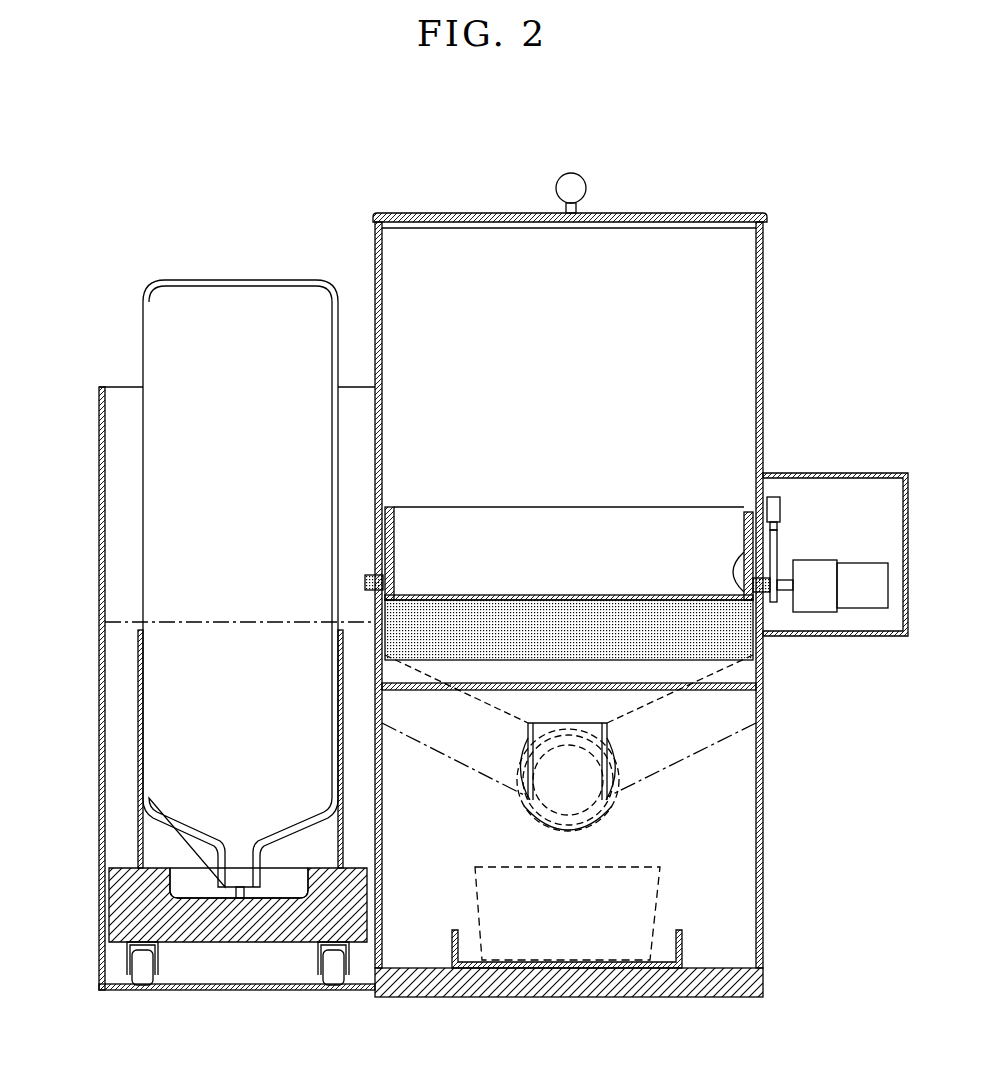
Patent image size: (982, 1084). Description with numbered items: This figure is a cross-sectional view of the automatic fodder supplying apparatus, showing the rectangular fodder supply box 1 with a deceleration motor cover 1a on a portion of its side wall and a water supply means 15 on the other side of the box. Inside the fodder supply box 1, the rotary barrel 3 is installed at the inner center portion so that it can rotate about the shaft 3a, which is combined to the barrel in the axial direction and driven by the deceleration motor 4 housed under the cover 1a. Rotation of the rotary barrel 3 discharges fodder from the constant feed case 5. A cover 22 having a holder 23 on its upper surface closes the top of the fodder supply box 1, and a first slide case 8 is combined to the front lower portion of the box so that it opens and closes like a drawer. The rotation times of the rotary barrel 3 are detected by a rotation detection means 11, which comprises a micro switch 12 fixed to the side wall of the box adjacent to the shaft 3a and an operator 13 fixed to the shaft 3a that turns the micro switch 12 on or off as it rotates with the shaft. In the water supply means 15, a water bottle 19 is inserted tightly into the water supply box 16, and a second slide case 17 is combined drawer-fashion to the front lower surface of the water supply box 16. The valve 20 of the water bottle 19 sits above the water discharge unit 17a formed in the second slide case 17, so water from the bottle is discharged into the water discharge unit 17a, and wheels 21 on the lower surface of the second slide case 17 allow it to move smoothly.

The fodder supply box 1 is at (770, 278).
The deceleration motor cover 1a is at (885, 473).
The rotary barrel 3 is at (737, 655).
The shaft 3a is at (365, 578).
The deceleration motor 4 is at (868, 600).
The constant feed case 5 is at (757, 598).
The first slide case 8 is at (683, 952).
The rotation detection means 11 is at (773, 495).
The micro switch 12 is at (781, 507).
The operator 13 is at (777, 550).
The water supply means 15 is at (99, 387).
The water supply box 16 is at (99, 950).
The second slide case 17 is at (180, 925).
The water discharge unit 17a is at (210, 905).
The water bottle 19 is at (237, 280).
The valve 20 is at (243, 882).
The wheels 21 is at (144, 975).
The cover 22 is at (685, 213).
The holder 23 is at (574, 180).